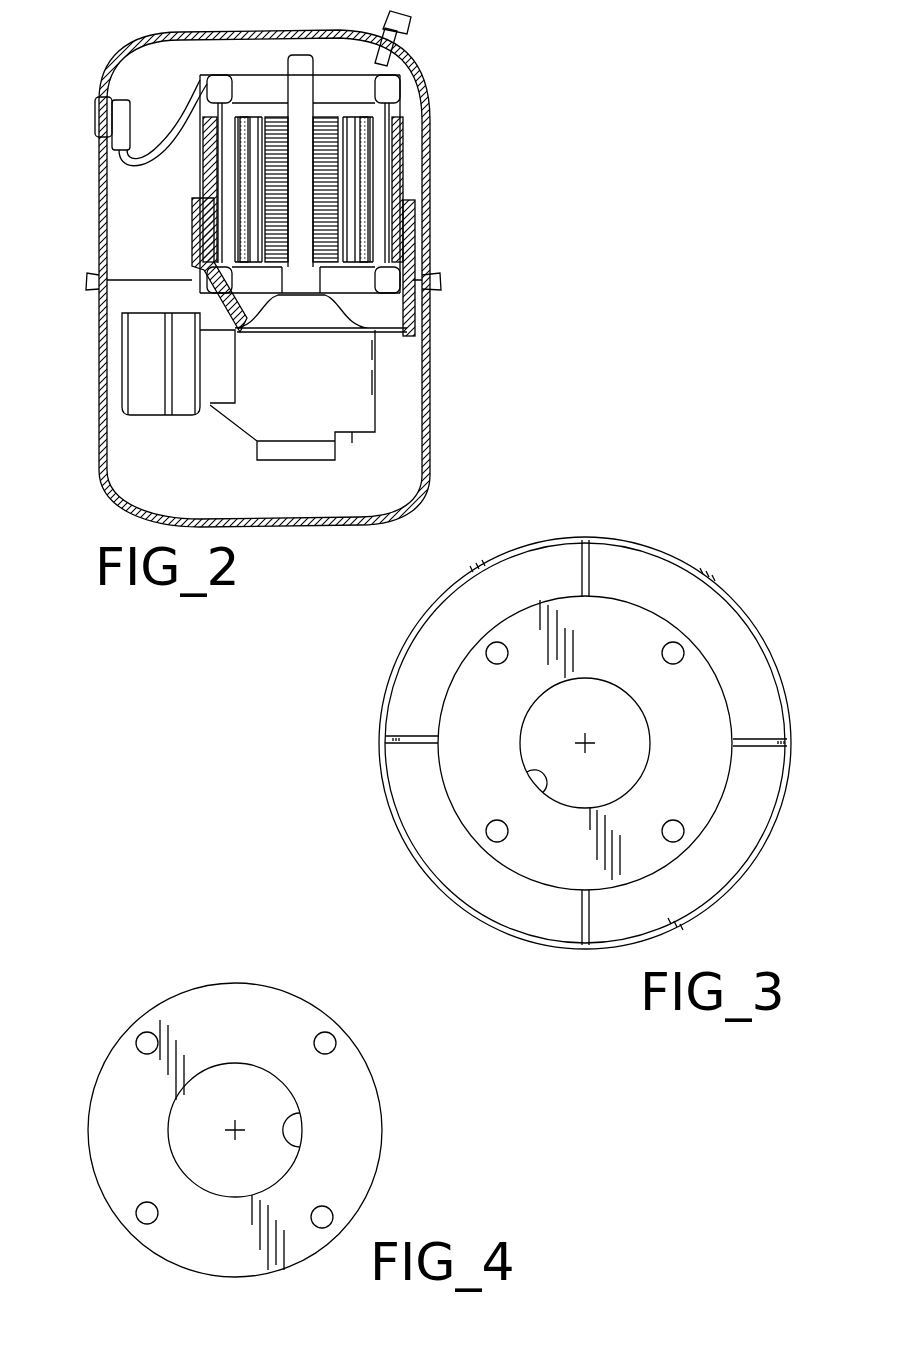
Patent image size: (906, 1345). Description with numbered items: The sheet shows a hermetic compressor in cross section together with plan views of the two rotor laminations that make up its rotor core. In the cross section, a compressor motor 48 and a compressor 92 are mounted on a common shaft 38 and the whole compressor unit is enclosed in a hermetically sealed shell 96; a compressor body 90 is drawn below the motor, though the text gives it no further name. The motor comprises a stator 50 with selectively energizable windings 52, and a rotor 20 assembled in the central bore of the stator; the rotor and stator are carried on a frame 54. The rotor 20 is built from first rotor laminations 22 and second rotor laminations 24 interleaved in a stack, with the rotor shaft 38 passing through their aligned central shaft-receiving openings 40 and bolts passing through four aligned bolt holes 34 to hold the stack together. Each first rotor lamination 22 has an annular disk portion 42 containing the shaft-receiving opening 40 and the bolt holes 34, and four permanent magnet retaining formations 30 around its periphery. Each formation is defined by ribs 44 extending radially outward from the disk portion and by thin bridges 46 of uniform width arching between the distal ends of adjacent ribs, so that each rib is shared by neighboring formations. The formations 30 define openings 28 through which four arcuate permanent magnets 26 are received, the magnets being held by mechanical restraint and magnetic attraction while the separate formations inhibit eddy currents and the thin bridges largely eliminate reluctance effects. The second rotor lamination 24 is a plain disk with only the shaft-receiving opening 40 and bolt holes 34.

In FIG. 2, the rotor 20 is at (370, 163).
In FIG. 3, the first rotor lamination 22 is at (575, 735).
In FIG. 4, the second rotor lamination 24 is at (155, 1003).
In FIG. 2, the permanent magnet 26 is at (257, 125).
In FIG. 3, the opening 28 is at (518, 568).
In FIG. 3, the permanent magnet retaining formation 30 is at (393, 633).
In FIG. 3, the bolt hole 34 is at (488, 655).
In FIG. 4, the bolt hole 34 is at (136, 1045).
In FIG. 2, the rotor shaft 38 is at (197, 187).
In FIG. 3, the central shaft-receiving opening 40 is at (530, 775).
In FIG. 4, the central shaft-receiving opening 40 is at (297, 1110).
In FIG. 3, the annular disk portion 42 is at (477, 677).
In FIG. 3, the rib 44 is at (594, 557).
In FIG. 3, the bridge 46 is at (690, 548).
In FIG. 2, the compressor motor 48 is at (289, 166).
In FIG. 2, the stator 50 is at (400, 110).
In FIG. 2, the windings 52 is at (393, 72).
In FIG. 2, the frame 54 is at (413, 213).
In FIG. 2, the compressor 90 is at (365, 391).
In FIG. 2, the compressor 92 is at (503, 280).
In FIG. 2, the shell 96 is at (100, 398).